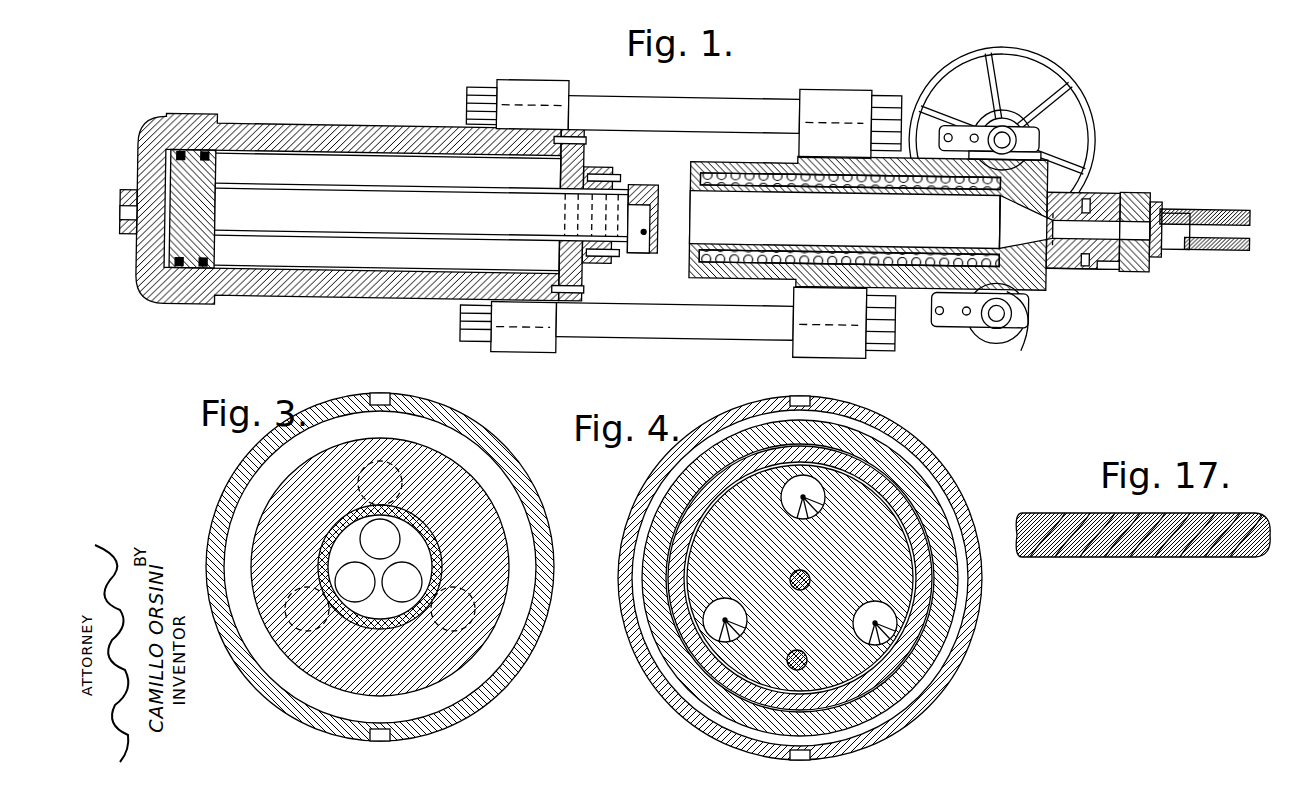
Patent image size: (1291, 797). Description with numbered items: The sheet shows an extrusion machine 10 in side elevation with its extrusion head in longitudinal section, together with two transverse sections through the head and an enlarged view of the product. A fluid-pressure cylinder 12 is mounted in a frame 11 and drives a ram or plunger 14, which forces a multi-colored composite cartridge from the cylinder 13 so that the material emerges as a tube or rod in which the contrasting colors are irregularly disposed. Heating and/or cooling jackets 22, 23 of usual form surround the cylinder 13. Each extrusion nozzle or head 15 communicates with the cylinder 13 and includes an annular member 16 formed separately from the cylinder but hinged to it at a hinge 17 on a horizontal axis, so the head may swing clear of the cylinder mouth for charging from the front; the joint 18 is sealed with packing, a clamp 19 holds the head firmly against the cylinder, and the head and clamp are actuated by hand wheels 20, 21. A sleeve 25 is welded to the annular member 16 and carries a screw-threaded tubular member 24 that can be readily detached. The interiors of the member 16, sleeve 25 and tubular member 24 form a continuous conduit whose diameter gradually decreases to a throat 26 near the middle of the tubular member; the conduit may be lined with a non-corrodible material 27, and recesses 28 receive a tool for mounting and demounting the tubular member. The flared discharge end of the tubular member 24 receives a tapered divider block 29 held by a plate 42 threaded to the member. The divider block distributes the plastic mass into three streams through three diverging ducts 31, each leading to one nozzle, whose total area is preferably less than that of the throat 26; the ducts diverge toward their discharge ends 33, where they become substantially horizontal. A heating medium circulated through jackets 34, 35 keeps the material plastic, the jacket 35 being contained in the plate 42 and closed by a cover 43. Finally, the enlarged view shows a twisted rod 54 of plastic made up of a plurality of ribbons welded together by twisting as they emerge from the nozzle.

In FIG. 1, the extrusion machine 10 is at (776, 93).
In FIG. 1, the frame 11 is at (517, 82).
In FIG. 1, the fluid-pressure cylinder 12 is at (275, 133).
In FIG. 1, the cylinder 13 is at (695, 244).
In FIG. 1, the ram or plunger 14 is at (650, 181).
In FIG. 1, the extrusion nozzle or head 15 is at (1127, 186).
In FIG. 1, the annular member 16 is at (1035, 308).
In FIG. 1, the hinge 17 is at (1010, 127).
In FIG. 1, the joint 18 is at (987, 221).
In FIG. 1, the clamp 19 is at (1012, 324).
In FIG. 1, the hand wheel 20 is at (952, 68).
In FIG. 1, the hand wheel 21 is at (986, 340).
In FIG. 1, the heating and/or cooling jacket 22 is at (726, 258).
In FIG. 1, the heating and/or cooling jacket 23 is at (860, 258).
In FIG. 1, the tubular member 24 is at (1112, 264).
In FIG. 3, the tubular member 24 is at (433, 460).
In FIG. 4, the tubular member 24 is at (907, 643).
In FIG. 1, the sleeve 25 is at (1060, 264).
In FIG. 1, the throat 26 is at (1095, 225).
In FIG. 3, the throat 26 is at (380, 567).
In FIG. 1, the non-corrodible lining material 27 is at (1024, 203).
In FIG. 1, the recesses 28 is at (1097, 186).
In FIG. 4, the tapered divider block 29 is at (693, 588).
In FIG. 3, the diverging ducts 31 is at (378, 560).
In FIG. 4, the discharge ends 33 is at (708, 625).
In FIG. 3, the heating jacket 34 is at (510, 503).
In FIG. 4, the heating jacket 35 is at (923, 472).
In FIG. 4, the plate 42 is at (947, 592).
In FIG. 4, the cover 43 is at (890, 430).
In FIG. 1, the twisted rod 54 is at (1248, 202).
In FIG. 17, the twisted rod 54 is at (1230, 522).